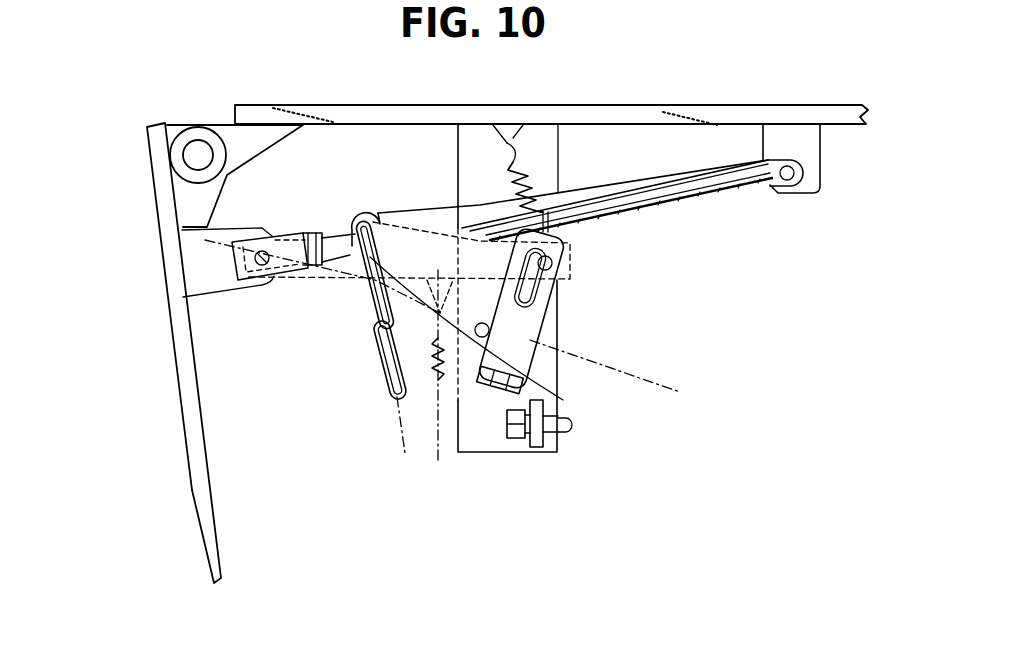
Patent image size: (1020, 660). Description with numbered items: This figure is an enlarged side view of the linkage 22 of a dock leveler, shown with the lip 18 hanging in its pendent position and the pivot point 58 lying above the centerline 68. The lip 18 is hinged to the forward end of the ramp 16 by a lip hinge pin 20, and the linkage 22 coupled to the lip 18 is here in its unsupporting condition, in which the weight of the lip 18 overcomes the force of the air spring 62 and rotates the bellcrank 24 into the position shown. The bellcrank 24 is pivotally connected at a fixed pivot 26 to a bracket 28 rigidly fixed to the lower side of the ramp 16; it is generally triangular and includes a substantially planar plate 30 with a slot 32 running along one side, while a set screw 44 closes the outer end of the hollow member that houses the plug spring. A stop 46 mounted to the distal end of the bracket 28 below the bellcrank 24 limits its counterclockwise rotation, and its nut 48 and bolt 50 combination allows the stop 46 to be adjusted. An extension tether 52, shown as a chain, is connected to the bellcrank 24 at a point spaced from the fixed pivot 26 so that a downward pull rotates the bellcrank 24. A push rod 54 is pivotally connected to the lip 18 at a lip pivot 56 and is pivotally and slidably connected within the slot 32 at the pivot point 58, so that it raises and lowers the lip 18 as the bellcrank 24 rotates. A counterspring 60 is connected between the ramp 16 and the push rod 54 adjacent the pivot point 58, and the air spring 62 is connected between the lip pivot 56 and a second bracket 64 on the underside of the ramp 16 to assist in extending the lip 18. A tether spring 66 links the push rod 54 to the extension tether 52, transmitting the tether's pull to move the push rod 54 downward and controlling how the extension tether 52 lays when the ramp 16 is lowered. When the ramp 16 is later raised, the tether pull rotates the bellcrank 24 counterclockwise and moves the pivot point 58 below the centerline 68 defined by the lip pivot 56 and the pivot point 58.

The ramp 16 is at (665, 105).
The lip 18 is at (200, 502).
The lip hinge pin 20 is at (198, 142).
The linkage 22 is at (383, 512).
The bellcrank 24 is at (388, 190).
The fixed pivot 26 is at (490, 330).
The bracket 28 is at (533, 133).
The plate 30 is at (362, 217).
The slot 32 is at (545, 292).
The set screw 44 is at (523, 380).
The stop 46 is at (496, 423).
The nut 48 is at (558, 445).
The bolt 50 is at (520, 440).
The extension tether 52 is at (388, 352).
The push rod 54 is at (343, 270).
The lip pivot 56 is at (262, 284).
The pivot point 58 is at (552, 263).
The counterspring 60 is at (540, 180).
The air spring 62 is at (693, 207).
The second bracket 64 is at (795, 147).
The tether spring 66 is at (433, 385).
The centerline 68 is at (668, 382).